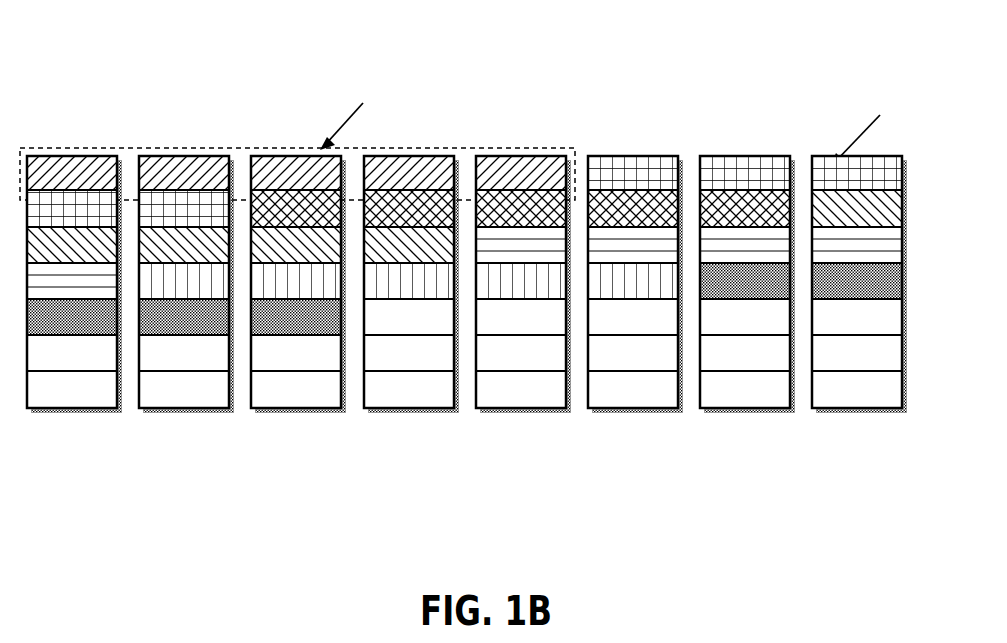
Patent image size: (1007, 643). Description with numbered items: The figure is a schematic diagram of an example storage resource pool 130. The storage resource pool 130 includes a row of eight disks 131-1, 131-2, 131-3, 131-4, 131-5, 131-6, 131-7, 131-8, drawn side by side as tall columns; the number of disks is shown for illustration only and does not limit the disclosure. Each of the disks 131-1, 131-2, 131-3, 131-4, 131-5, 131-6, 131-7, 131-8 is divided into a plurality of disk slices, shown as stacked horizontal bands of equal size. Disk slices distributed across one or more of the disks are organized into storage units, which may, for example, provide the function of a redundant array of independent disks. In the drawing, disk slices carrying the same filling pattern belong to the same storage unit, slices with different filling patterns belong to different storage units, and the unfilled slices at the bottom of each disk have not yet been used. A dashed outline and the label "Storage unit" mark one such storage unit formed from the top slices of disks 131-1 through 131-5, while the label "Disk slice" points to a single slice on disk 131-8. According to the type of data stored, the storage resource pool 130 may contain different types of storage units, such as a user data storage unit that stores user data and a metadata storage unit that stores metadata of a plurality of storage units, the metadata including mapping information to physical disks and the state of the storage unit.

The storage resource pool 130 is at (160, 88).
The disk 131-1 is at (74, 326).
The disk 131-2 is at (186, 326).
The disk 131-3 is at (298, 326).
The disk 131-4 is at (411, 326).
The disk 131-5 is at (523, 326).
The disk 131-6 is at (635, 326).
The disk 131-7 is at (747, 326).
The disk 131-8 is at (859, 326).